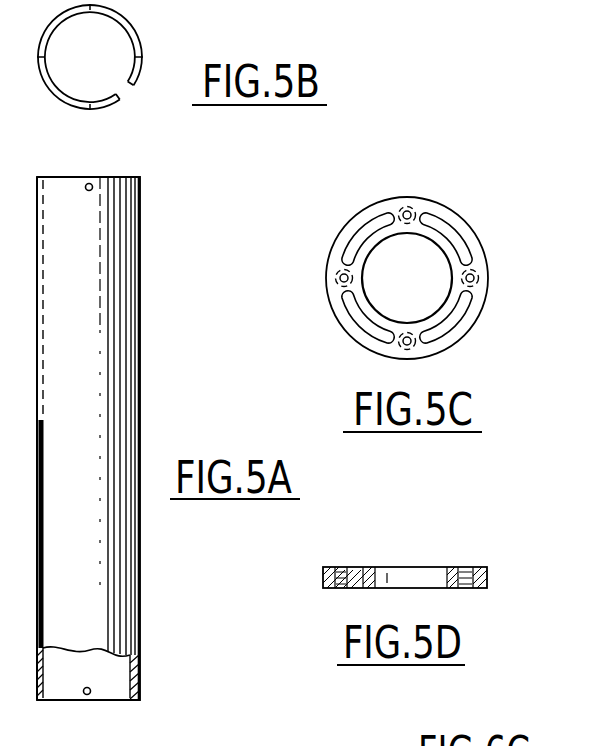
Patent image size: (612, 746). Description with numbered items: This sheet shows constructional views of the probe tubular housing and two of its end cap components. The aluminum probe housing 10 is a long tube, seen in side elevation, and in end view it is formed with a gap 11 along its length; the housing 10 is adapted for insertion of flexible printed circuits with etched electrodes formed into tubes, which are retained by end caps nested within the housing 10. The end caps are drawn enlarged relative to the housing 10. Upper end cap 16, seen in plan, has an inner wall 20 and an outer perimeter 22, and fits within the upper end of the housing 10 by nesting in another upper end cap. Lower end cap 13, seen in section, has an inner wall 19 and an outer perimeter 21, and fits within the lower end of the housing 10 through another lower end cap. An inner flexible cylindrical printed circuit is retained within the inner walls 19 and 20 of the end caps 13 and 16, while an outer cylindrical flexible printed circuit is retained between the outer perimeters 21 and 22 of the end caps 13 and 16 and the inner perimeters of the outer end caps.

In FIG. 5A, the aluminum probe housing 10 is at (118, 358).
In FIG. 5B, the gap 11 is at (121, 96).
In FIG. 5D, the lower end cap 13 is at (430, 557).
In FIG. 5C, the upper end cap 16 is at (426, 256).
In FIG. 5D, the inner wall 19 is at (377, 567).
In FIG. 5C, the inner wall 20 is at (442, 261).
In FIG. 5D, the outer perimeter 21 is at (492, 582).
In FIG. 5C, the outer perimeter 22 is at (466, 231).